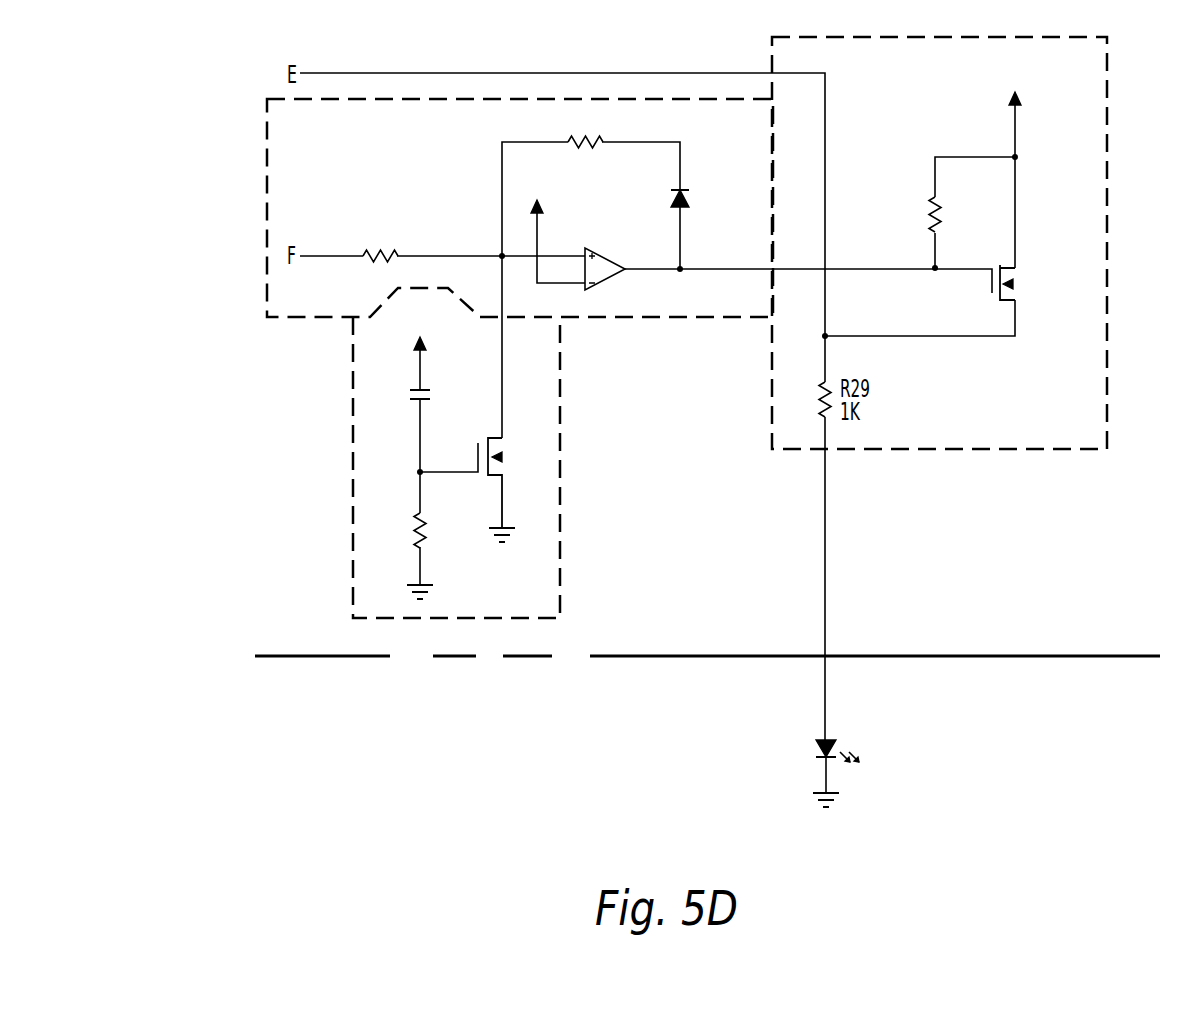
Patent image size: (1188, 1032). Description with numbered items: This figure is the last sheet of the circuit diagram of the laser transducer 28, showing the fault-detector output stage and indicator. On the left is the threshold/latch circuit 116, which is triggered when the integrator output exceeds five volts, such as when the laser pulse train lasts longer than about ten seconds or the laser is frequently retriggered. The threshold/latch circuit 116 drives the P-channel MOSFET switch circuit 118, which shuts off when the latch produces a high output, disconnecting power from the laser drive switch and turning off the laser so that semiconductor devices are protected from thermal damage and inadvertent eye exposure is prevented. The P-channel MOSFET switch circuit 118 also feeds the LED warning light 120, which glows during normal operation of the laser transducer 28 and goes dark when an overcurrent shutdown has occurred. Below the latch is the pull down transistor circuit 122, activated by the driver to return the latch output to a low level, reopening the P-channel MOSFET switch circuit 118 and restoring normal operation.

The threshold/latch circuit 116 is at (272, 193).
The P-channel MOSFET switch circuit 118 is at (1097, 325).
The LED warning light 120 is at (815, 745).
The pull down transistor circuit 122 is at (550, 445).
The laser transducer 28 is at (965, 695).